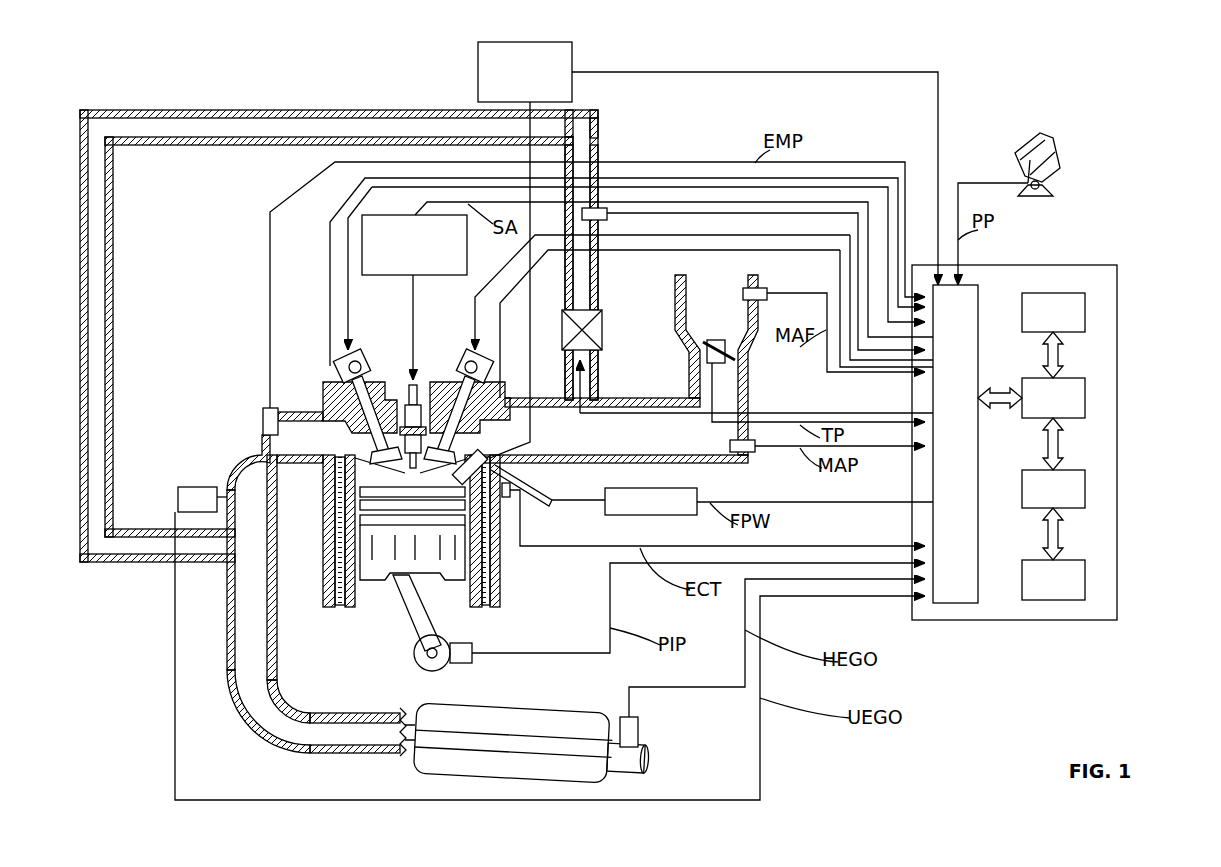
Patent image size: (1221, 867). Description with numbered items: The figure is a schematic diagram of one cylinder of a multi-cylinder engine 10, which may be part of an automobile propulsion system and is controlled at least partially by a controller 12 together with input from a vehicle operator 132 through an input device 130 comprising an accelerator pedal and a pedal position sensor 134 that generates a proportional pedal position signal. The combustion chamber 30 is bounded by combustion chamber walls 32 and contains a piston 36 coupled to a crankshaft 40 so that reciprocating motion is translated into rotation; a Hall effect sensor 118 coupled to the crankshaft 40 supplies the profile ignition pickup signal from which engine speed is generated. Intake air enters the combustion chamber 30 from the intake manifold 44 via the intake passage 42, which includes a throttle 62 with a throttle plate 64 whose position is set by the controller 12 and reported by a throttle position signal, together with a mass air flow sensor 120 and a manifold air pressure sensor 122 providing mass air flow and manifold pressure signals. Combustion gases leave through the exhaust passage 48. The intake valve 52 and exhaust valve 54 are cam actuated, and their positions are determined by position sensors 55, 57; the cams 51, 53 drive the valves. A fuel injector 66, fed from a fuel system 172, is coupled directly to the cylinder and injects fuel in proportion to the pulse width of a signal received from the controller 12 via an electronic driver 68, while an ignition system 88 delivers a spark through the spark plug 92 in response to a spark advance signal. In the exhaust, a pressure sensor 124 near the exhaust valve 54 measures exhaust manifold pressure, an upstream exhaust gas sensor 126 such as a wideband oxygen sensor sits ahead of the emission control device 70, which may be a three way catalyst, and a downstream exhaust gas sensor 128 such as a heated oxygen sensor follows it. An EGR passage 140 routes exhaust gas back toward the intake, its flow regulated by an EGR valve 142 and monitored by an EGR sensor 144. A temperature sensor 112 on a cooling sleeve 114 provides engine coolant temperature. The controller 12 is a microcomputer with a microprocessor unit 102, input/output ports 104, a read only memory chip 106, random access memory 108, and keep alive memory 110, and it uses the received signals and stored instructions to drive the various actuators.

The engine 10 is at (217, 248).
The controller 12 is at (1045, 428).
The combustion chamber 30 is at (413, 470).
The combustion chamber walls 32 is at (358, 604).
The piston 36 is at (398, 566).
The crankshaft 40 is at (420, 668).
The intake passage 42 is at (716, 365).
The intake manifold 44 is at (606, 430).
The exhaust passage 48 is at (300, 437).
The intake cam 51 is at (466, 352).
The intake valve 52 is at (470, 437).
The exhaust cam 53 is at (356, 352).
The exhaust valve 54 is at (376, 420).
The position sensor 55 is at (486, 368).
The position sensor 57 is at (340, 360).
The throttle 62 is at (735, 358).
The throttle plate 64 is at (707, 350).
The fuel injector 66 is at (510, 468).
The electronic driver 68 is at (605, 515).
The emission control device 70 is at (572, 710).
The ignition system 88 is at (368, 215).
The spark plug 92 is at (418, 385).
The microprocessor unit 102 is at (1085, 396).
The input/output ports 104 is at (978, 290).
The read only memory chip 106 is at (1085, 312).
The random access memory 108 is at (1085, 490).
The keep alive memory 110 is at (1085, 580).
The temperature sensor 112 is at (512, 498).
The cooling sleeve 114 is at (486, 563).
The Hall effect sensor 118 is at (466, 663).
The mass air flow sensor 120 is at (767, 290).
The manifold air pressure sensor 122 is at (755, 452).
The pressure sensor 124 is at (263, 412).
The upstream exhaust gas sensor 126 is at (178, 492).
The downstream exhaust gas sensor 128 is at (638, 722).
The input device 130 is at (1022, 160).
The vehicle operator 132 is at (1060, 150).
The pedal position sensor 134 is at (1053, 191).
The EGR passage 140 is at (340, 110).
The EGR valve 142 is at (602, 330).
The EGR sensor 144 is at (600, 220).
The fuel system 172 is at (563, 42).